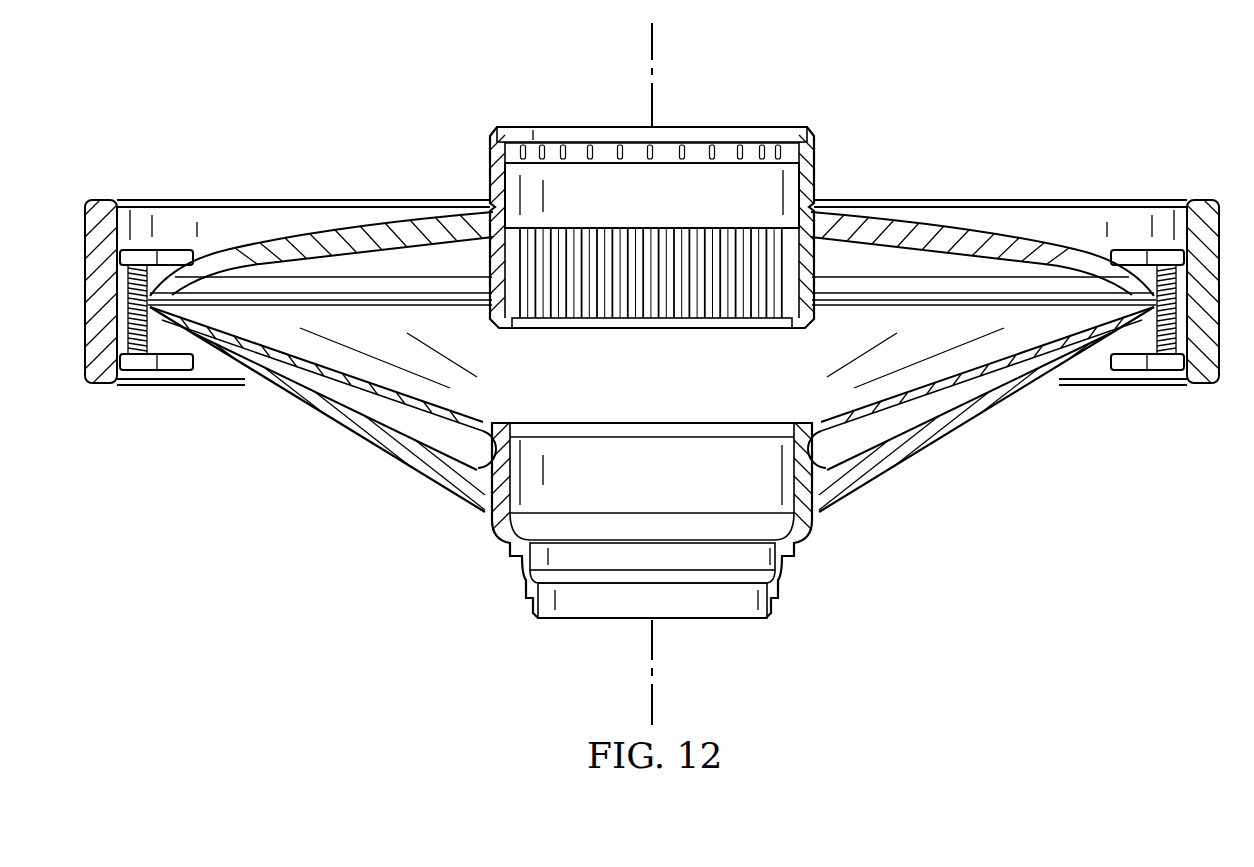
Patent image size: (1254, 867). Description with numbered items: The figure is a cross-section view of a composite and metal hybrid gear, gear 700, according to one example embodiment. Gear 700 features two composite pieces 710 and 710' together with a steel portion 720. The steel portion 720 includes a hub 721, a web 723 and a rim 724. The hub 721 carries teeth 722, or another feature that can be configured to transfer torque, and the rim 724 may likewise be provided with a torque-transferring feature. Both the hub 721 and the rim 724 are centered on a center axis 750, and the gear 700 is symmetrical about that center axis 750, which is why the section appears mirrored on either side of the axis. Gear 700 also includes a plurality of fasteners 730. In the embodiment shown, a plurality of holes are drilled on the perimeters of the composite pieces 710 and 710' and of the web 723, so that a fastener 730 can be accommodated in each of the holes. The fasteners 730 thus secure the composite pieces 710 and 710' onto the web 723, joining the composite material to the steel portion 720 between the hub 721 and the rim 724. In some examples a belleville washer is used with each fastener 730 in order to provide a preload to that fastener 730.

The gear 700 is at (902, 126).
The composite piece 710 is at (652, 229).
The composite piece 710' is at (652, 409).
The steel portion 720 is at (490, 190).
The hub 721 is at (620, 127).
The teeth 722 is at (643, 315).
The web 723 is at (907, 388).
The rim 724 is at (1198, 200).
The fastener 730 is at (1167, 373).
The center axis 750 is at (654, 42).